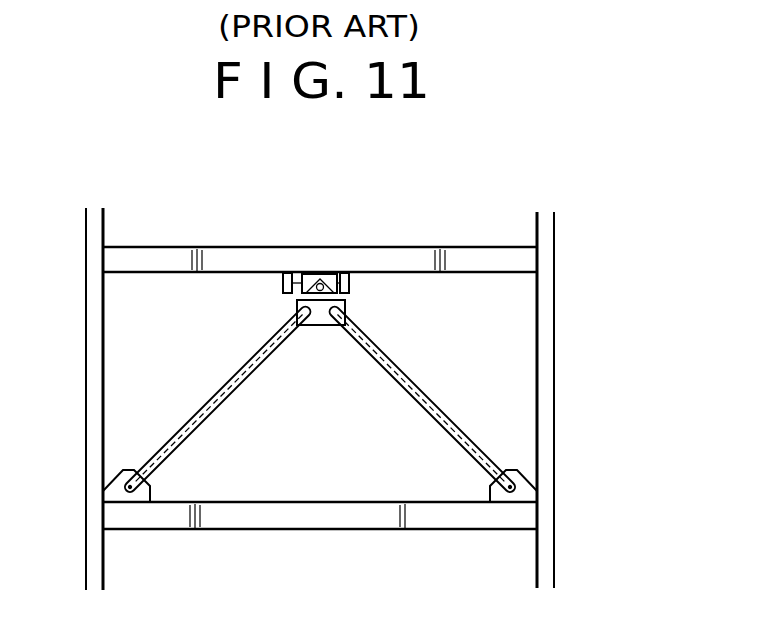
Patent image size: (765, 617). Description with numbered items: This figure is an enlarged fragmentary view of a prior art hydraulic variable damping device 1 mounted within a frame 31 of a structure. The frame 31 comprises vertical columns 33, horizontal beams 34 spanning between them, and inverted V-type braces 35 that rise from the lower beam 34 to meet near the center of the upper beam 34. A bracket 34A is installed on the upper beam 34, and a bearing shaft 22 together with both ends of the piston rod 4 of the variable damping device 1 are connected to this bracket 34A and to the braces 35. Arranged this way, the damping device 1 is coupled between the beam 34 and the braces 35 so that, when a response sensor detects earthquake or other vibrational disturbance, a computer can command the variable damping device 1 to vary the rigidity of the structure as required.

The variable damping device 1 is at (352, 290).
The piston rod 4 is at (295, 276).
The bearing shaft 22 is at (328, 276).
The frame 31 is at (466, 235).
The columns 33 is at (106, 372).
The beams 34 is at (167, 247).
The bracket 34A is at (285, 285).
The braces 35 is at (254, 369).